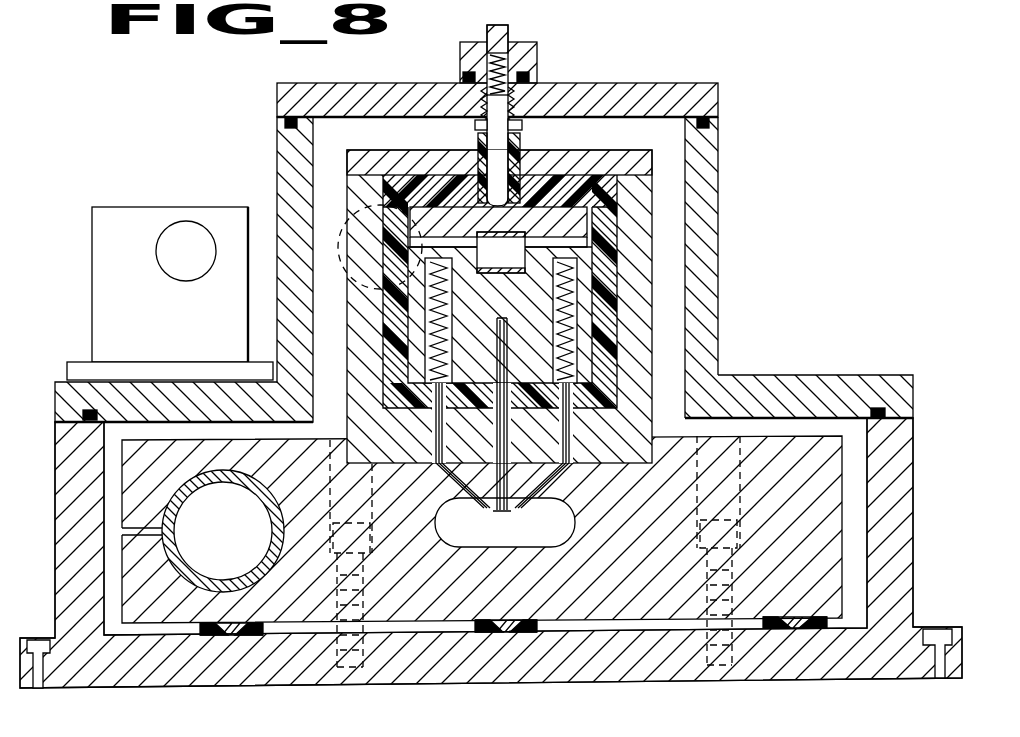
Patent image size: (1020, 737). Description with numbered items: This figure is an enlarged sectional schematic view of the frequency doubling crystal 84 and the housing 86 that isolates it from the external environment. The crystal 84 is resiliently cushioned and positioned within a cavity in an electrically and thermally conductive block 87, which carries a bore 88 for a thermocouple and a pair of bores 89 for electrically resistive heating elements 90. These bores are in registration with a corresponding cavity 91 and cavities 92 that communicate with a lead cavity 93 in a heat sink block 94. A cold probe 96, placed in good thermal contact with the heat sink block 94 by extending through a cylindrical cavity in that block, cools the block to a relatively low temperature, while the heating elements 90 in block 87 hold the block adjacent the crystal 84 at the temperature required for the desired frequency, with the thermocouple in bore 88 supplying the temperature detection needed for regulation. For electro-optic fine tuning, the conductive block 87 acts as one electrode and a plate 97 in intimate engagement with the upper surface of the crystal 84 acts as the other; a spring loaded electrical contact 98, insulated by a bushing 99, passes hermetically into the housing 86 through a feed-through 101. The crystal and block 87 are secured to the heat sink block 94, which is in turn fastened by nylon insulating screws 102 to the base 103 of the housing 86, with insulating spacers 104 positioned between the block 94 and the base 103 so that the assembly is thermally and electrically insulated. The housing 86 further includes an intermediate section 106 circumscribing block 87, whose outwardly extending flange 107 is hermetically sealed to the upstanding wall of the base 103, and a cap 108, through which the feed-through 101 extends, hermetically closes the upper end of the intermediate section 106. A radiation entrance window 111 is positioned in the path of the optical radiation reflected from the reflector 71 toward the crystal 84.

The reflector 71 is at (162, 243).
The frequency doubling crystal 84 is at (512, 261).
The housing 86 is at (738, 181).
The electrically and thermally conductive block 87 is at (478, 333).
The bore for thermocouple 88 is at (508, 320).
The bores for heating elements 89 is at (427, 297).
The electrically resistive heating elements 90 is at (425, 352).
The cavity 91 is at (509, 483).
The cavities 92 is at (452, 489).
The lead cavity 93 is at (570, 521).
The heat sink block 94 is at (444, 590).
The cold probe 96 is at (276, 516).
The plate 97 is at (572, 231).
The spring loaded electrical contact 98 is at (490, 134).
The bushing 99 is at (518, 141).
The feed-through 101 is at (530, 52).
The insulating screws 102 is at (364, 638).
The base 103 is at (326, 671).
The spacers 104 is at (243, 632).
The intermediate section 106 is at (718, 300).
The flange 107 is at (760, 380).
The cap 108 is at (710, 101).
The radiation entrance window 111 is at (345, 230).